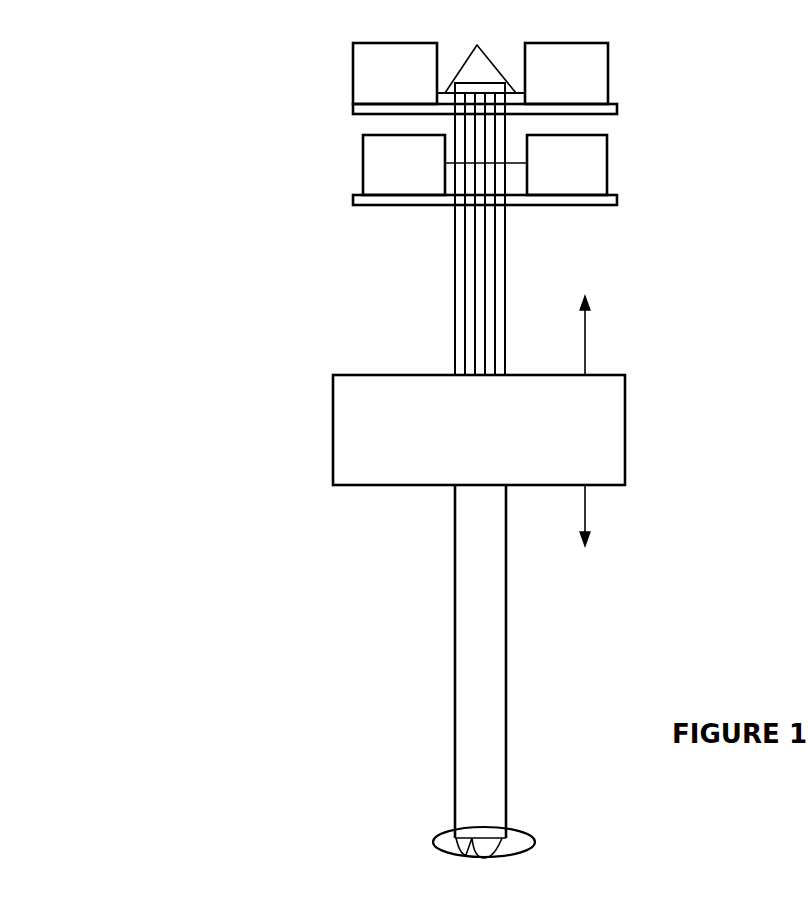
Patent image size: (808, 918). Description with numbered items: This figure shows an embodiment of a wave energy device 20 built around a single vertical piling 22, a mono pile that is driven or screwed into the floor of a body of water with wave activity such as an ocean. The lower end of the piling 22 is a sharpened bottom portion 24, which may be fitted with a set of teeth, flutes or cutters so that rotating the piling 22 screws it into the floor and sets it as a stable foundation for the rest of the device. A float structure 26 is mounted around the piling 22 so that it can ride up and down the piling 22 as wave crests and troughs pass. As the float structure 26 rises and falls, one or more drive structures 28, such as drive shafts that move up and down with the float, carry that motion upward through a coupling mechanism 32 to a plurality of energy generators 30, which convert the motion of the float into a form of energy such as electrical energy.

The wave energy device 20 is at (216, 149).
The piling 22 is at (485, 587).
The sharpened bottom portion 24 is at (525, 837).
The float structure 26 is at (500, 445).
The drive structure 28 is at (485, 243).
The energy generator 30 is at (409, 87).
The coupling mechanism 32 is at (481, 39).